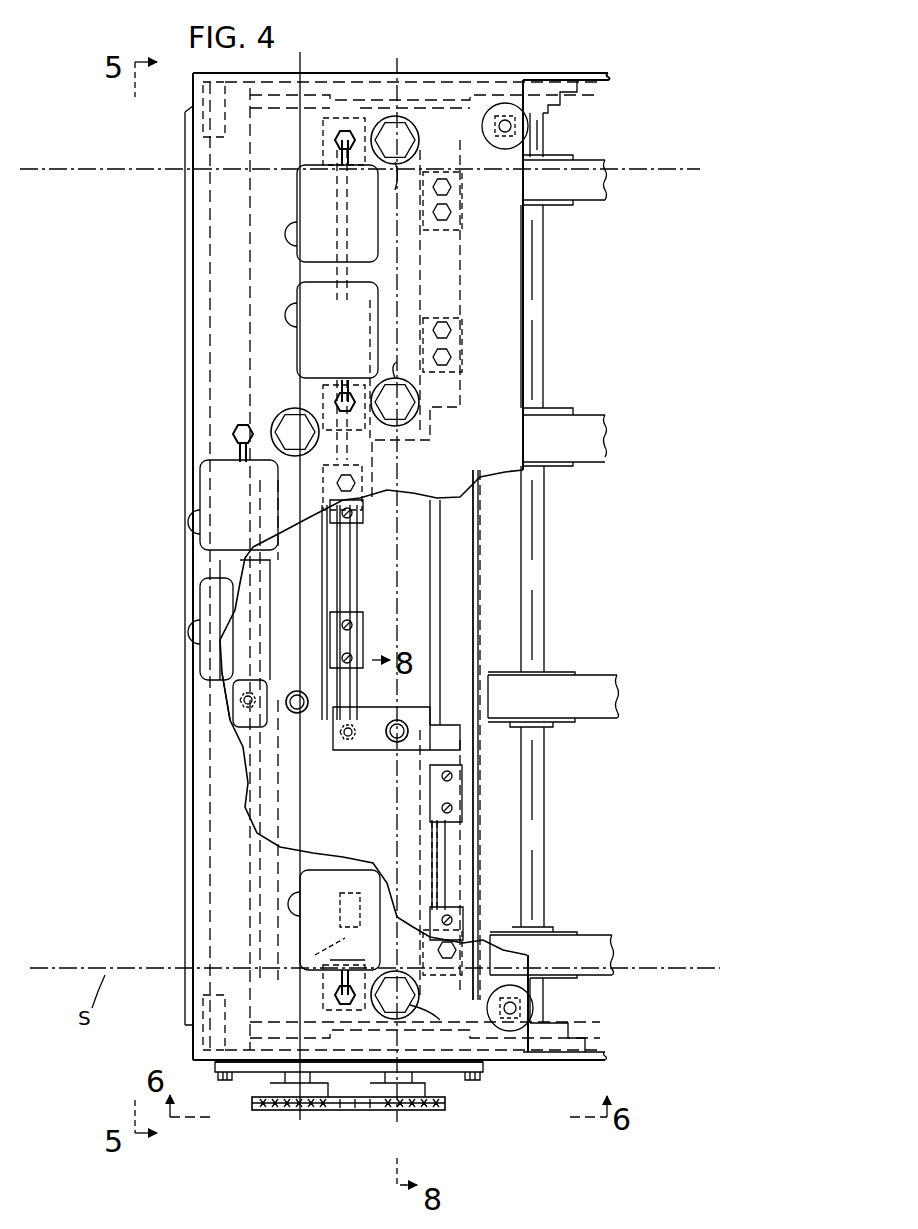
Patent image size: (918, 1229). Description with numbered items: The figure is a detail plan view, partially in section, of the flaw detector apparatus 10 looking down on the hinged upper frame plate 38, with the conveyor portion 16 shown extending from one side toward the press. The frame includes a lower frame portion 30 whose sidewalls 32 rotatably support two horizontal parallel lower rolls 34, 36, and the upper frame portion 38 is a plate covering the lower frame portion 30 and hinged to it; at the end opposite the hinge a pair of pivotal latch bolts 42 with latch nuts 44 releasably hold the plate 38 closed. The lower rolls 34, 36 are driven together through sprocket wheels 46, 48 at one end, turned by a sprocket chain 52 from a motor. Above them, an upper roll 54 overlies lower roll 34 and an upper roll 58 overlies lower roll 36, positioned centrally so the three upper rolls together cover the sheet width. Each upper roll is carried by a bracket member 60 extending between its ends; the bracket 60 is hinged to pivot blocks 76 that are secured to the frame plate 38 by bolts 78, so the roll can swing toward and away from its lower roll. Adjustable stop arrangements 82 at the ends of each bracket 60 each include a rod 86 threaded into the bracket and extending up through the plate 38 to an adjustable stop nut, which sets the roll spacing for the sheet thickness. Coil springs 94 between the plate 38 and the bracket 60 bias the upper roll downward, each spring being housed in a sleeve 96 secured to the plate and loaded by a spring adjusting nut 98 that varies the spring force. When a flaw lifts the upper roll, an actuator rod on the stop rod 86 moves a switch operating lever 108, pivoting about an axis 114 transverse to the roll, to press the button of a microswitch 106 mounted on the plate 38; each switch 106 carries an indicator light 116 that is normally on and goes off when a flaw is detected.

The flaw detector apparatus 10 is at (492, 50).
The conveyor portion 16 is at (600, 412).
The lower frame portion 30 is at (495, 1068).
The sidewalls 32 is at (595, 73).
The lower roll 34 is at (435, 648).
The lower roll 36 is at (265, 805).
The upper frame portion 38 is at (457, 492).
The pivotal latch bolts 42 is at (505, 132).
The latch nuts 44 is at (528, 128).
The sprocket wheel 46 is at (386, 1092).
The sprocket wheel 48 is at (283, 1092).
The sprocket chain 52 is at (345, 1110).
The upper roll 54 is at (445, 862).
The upper roll 58 is at (270, 620).
The bracket member 60 is at (420, 282).
The pivot blocks 76 is at (363, 655).
The bolts 78 is at (452, 187).
The adjustable stop arrangements 82 is at (333, 140).
The rod 86 is at (243, 708).
The coil springs 94 is at (298, 690).
The sleeve 96 is at (432, 599).
The spring adjusting nut 98 is at (408, 137).
The microswitch 106 is at (312, 200).
The switch operating lever 108 is at (312, 955).
The pivot axis 114 is at (345, 962).
The indicator light 116 is at (292, 305).